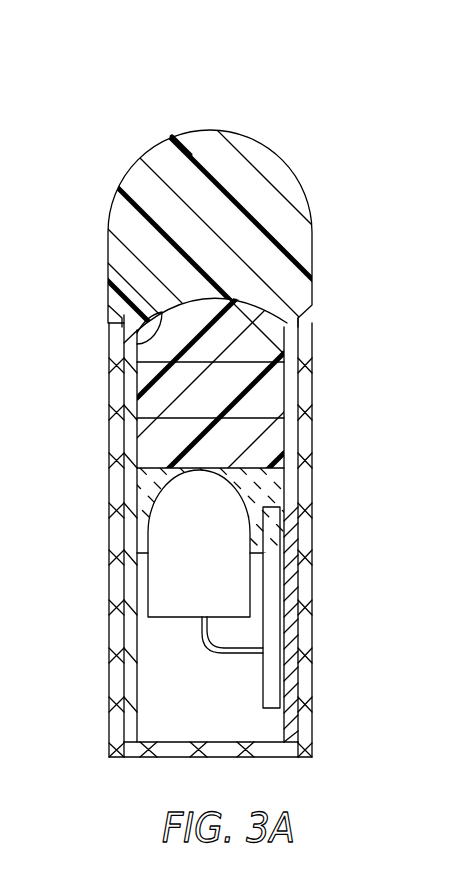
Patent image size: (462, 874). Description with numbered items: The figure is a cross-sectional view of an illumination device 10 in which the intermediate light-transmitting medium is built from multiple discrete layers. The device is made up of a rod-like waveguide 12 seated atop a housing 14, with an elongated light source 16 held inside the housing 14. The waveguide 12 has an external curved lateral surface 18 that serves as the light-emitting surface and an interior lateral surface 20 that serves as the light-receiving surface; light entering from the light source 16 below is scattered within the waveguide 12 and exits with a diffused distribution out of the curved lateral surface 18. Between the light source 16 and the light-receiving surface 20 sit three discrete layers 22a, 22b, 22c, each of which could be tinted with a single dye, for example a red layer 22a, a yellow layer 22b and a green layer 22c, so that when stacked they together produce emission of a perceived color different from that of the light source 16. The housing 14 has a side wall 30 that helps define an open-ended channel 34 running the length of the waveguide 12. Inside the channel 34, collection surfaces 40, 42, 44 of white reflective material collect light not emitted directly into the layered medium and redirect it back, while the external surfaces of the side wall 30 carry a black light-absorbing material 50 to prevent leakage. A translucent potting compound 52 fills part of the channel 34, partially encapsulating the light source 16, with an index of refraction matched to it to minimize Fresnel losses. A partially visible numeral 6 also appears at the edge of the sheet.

The partial reference numeral (cut off at sheet edge) 6 is at (7, 119).
The illumination device 10 is at (268, 113).
The waveguide 12 is at (107, 286).
The housing 14 is at (314, 695).
The light source 16 is at (228, 525).
The external curved lateral surface 18 is at (183, 130).
The interior lateral surface 20 is at (148, 347).
The first discrete layer 22a is at (267, 442).
The second discrete layer 22b is at (270, 407).
The third discrete layer 22c is at (284, 291).
The side wall 30 is at (110, 573).
The open-ended channel 34 is at (165, 636).
The collection surface 40 is at (140, 693).
The collection surface 42 is at (278, 735).
The collection surface 44 is at (175, 740).
The light-absorbing material 50 is at (365, 593).
The potting compound 52 is at (147, 483).